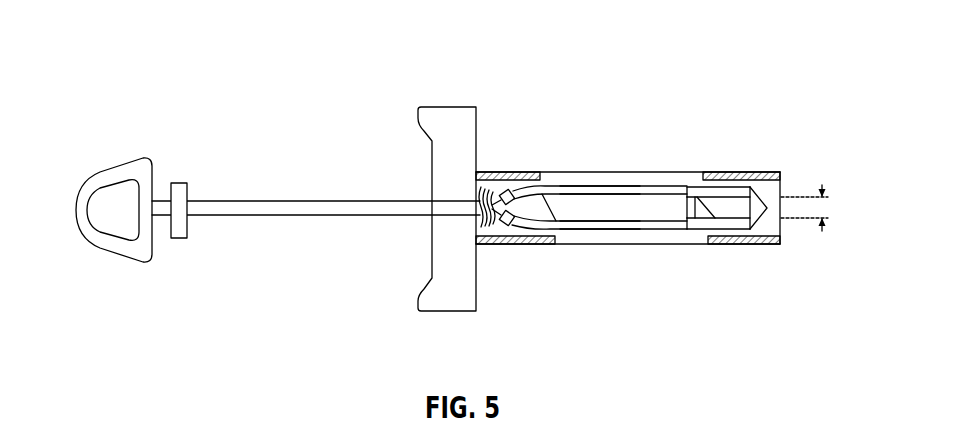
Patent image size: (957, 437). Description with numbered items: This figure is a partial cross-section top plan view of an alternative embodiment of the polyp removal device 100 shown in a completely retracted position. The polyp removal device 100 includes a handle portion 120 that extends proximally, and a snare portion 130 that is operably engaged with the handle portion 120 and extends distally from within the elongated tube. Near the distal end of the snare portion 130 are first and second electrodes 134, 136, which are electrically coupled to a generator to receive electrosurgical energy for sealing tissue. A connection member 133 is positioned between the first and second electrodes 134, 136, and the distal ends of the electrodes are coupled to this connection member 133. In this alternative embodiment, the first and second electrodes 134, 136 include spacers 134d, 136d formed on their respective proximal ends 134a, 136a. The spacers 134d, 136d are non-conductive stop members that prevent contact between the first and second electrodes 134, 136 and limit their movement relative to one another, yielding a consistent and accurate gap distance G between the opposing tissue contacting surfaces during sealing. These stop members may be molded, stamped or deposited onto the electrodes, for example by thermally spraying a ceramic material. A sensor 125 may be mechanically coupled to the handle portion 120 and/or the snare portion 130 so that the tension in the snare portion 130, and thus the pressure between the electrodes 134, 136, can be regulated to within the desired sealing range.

The polyp removal device 100 is at (540, 50).
The handle portion 120 is at (190, 310).
The sensor 125 is at (511, 191).
The snare portion 130 is at (592, 169).
The connection member 133 is at (764, 212).
The first electrode 134 is at (724, 182).
The proximal end of first electrode 134a is at (688, 192).
The spacer 134d is at (676, 193).
The second electrode 136 is at (725, 242).
The proximal end of second electrode 136a is at (688, 228).
The spacer 136d is at (674, 230).
The gap distance G is at (814, 200).